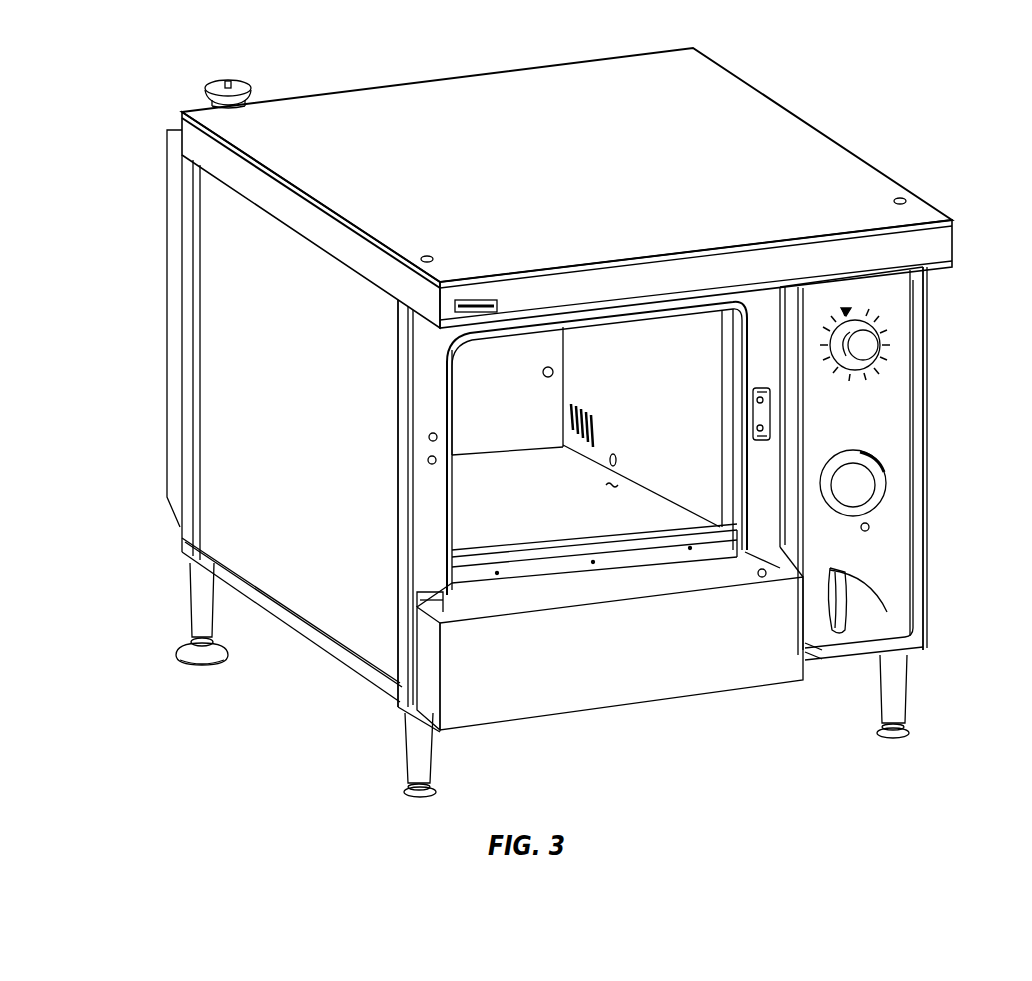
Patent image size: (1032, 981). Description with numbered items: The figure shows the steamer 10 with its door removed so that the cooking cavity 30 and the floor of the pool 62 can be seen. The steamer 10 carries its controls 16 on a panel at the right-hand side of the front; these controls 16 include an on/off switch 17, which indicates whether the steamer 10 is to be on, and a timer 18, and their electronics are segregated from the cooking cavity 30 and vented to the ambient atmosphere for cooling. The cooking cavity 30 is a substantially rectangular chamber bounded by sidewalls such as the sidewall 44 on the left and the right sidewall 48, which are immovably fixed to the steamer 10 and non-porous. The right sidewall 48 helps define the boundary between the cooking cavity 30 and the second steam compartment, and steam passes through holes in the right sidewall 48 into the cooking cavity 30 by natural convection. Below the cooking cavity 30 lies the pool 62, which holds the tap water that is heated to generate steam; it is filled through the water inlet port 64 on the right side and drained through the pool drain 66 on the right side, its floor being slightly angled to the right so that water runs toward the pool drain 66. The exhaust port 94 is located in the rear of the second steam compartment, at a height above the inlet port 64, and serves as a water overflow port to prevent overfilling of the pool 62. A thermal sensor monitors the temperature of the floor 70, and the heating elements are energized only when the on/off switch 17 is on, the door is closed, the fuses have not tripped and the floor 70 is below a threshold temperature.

The steamer 10 is at (580, 420).
The controls 16 is at (915, 444).
The on/off switch 17 is at (838, 568).
The timer 18 is at (877, 350).
The cooking cavity 30 is at (486, 424).
The sidewall 44 is at (506, 396).
The right sidewall 48 is at (681, 378).
The pool area 62 is at (560, 524).
The water inlet port 64 is at (617, 460).
The pool drain 66 is at (608, 487).
The floor 70 is at (524, 500).
The exhaust port 94 is at (583, 410).